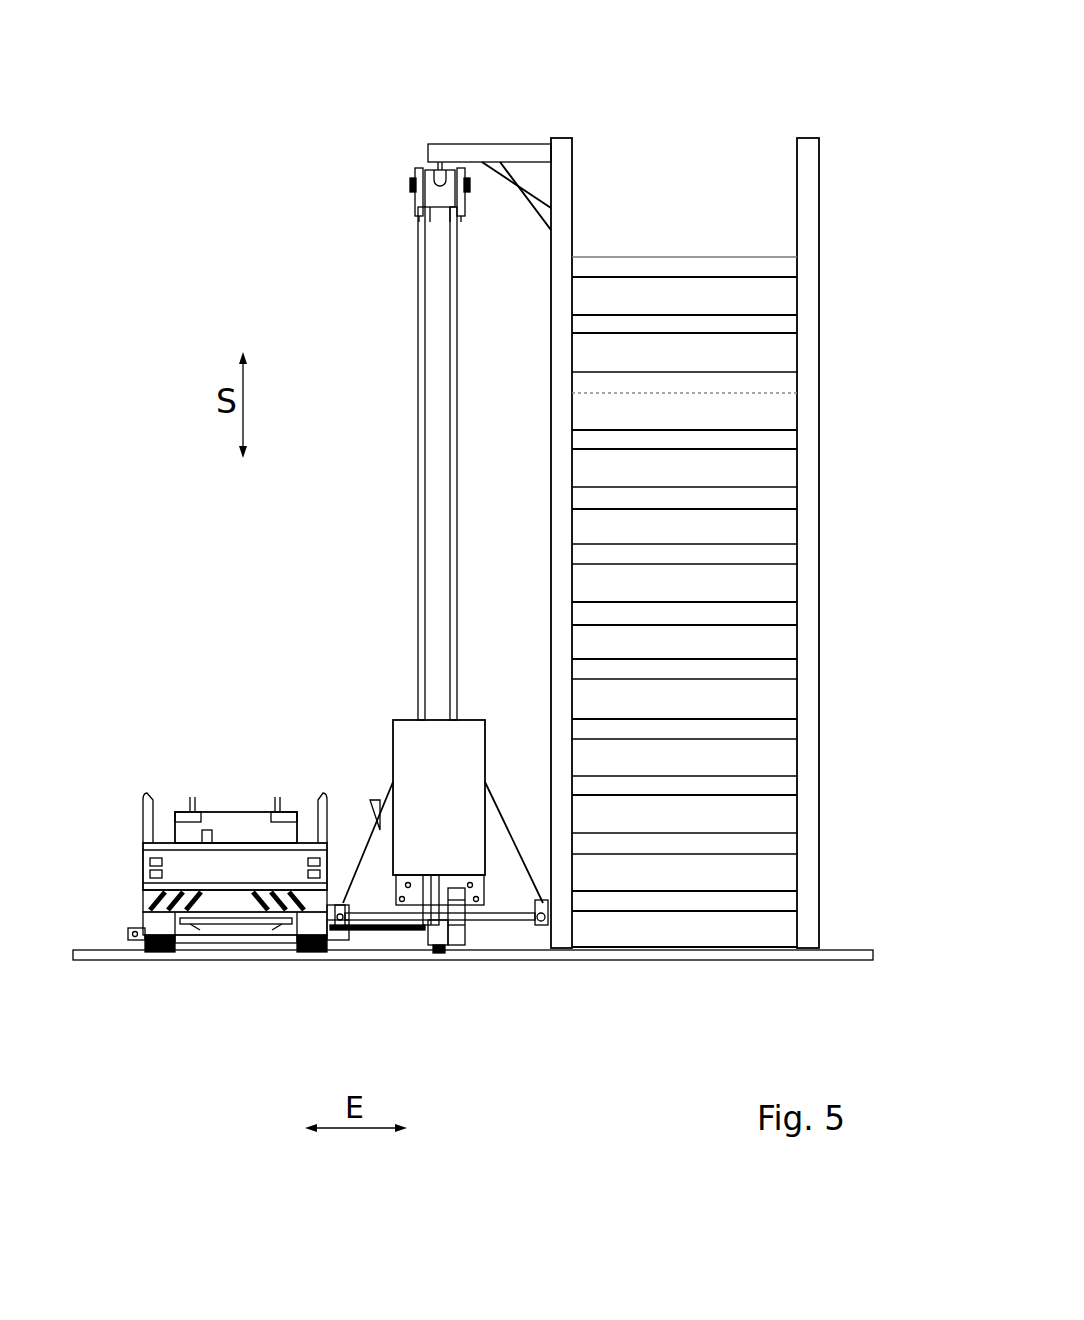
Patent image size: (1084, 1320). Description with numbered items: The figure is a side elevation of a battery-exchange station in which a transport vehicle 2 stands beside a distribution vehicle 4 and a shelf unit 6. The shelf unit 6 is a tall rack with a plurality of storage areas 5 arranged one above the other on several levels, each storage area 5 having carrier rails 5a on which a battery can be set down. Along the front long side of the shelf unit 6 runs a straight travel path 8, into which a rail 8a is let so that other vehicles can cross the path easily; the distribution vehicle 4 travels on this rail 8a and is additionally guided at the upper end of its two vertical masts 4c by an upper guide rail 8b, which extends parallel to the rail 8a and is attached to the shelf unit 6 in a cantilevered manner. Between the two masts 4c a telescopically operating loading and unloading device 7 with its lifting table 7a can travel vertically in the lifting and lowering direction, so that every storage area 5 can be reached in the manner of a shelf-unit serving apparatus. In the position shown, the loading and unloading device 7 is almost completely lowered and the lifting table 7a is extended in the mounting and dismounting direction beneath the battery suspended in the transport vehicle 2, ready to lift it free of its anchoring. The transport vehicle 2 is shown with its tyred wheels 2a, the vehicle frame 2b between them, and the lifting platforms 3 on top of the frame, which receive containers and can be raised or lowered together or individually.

The transport vehicle 2 is at (209, 871).
The wheels 2a is at (198, 820).
The vehicle frame 2b is at (278, 880).
The lifting platforms 3 is at (232, 822).
The distribution vehicle 4 is at (408, 586).
The vertical masts 4c is at (437, 583).
The storage areas 5 is at (716, 357).
The carrier rails 5a is at (716, 326).
The shelf unit 6 is at (729, 483).
The loading and unloading device 7 is at (497, 862).
The lifting table 7a is at (245, 938).
The travel path 8 is at (455, 964).
The rail 8a is at (440, 947).
The upper guide rail 8b is at (437, 165).